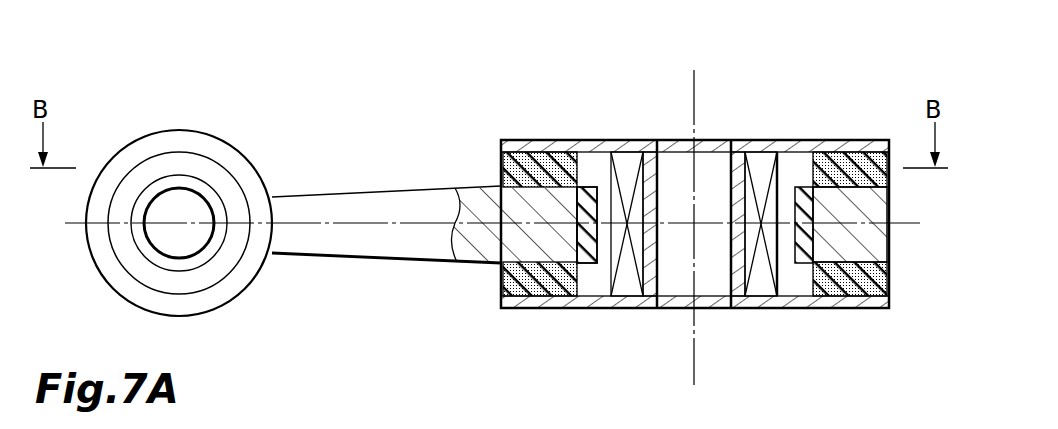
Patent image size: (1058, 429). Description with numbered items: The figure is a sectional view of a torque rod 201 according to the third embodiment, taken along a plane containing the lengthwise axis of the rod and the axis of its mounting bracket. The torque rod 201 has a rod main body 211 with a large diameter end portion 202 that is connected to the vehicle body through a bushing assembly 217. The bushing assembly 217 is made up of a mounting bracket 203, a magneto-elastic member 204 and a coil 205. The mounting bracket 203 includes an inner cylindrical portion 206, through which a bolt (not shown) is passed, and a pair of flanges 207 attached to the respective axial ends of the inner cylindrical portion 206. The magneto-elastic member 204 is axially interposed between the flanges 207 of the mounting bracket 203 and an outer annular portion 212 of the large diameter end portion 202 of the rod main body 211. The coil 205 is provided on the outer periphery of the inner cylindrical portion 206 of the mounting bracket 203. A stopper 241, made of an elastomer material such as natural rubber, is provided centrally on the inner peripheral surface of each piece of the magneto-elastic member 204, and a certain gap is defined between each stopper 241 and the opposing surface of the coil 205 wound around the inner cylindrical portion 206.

The torque rod 201 is at (182, 66).
The large diameter end portion 202 is at (515, 243).
The mounting bracket 203 is at (632, 140).
The magneto-elastic member 204 is at (502, 172).
The coil 205 is at (605, 172).
The inner cylindrical portion 206 is at (730, 183).
The flanges 207 is at (812, 155).
The rod main body 211 is at (345, 192).
The outer annular portion 212 is at (890, 243).
The bushing assembly 217 is at (540, 88).
The stopper 241 is at (590, 264).